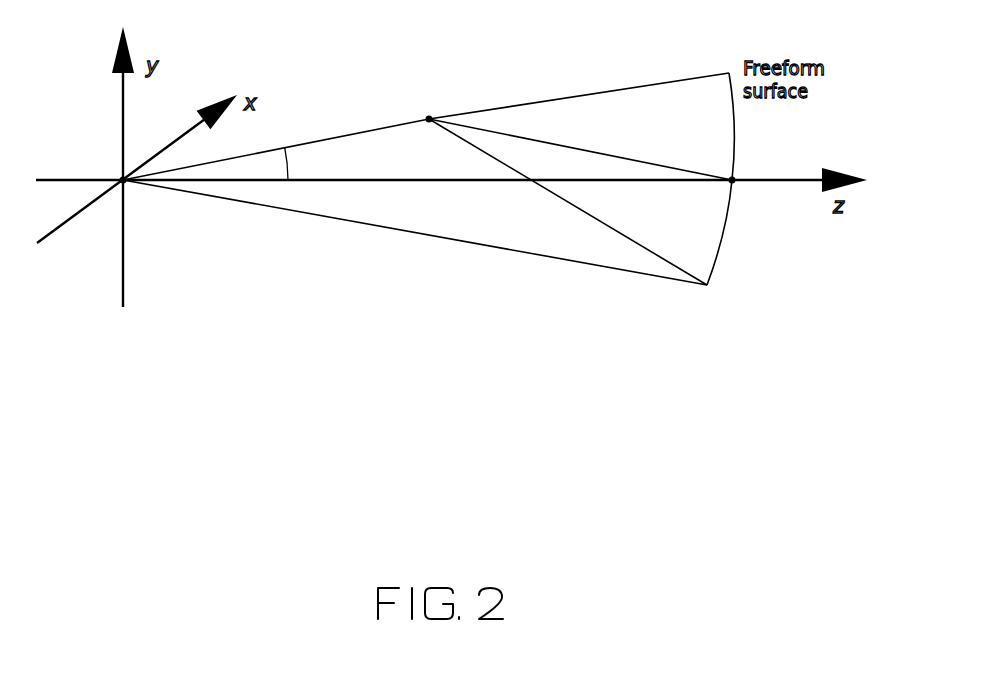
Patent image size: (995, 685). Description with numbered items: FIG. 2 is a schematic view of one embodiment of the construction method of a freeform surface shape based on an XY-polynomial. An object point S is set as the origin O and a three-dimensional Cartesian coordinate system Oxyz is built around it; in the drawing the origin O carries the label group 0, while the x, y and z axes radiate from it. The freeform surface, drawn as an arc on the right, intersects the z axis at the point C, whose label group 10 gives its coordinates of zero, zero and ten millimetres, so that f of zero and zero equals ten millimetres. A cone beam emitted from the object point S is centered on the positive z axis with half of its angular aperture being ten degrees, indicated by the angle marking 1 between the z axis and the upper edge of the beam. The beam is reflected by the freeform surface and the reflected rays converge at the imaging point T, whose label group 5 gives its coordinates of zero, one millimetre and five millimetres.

The origin O(S) of the coordinate system 0 is at (94, 165).
The point T(0,1,5) 5 is at (448, 98).
The point C(0,0,10) on the freeform surface 10 is at (792, 161).
The 10 degree tilt angle 1 is at (302, 164).